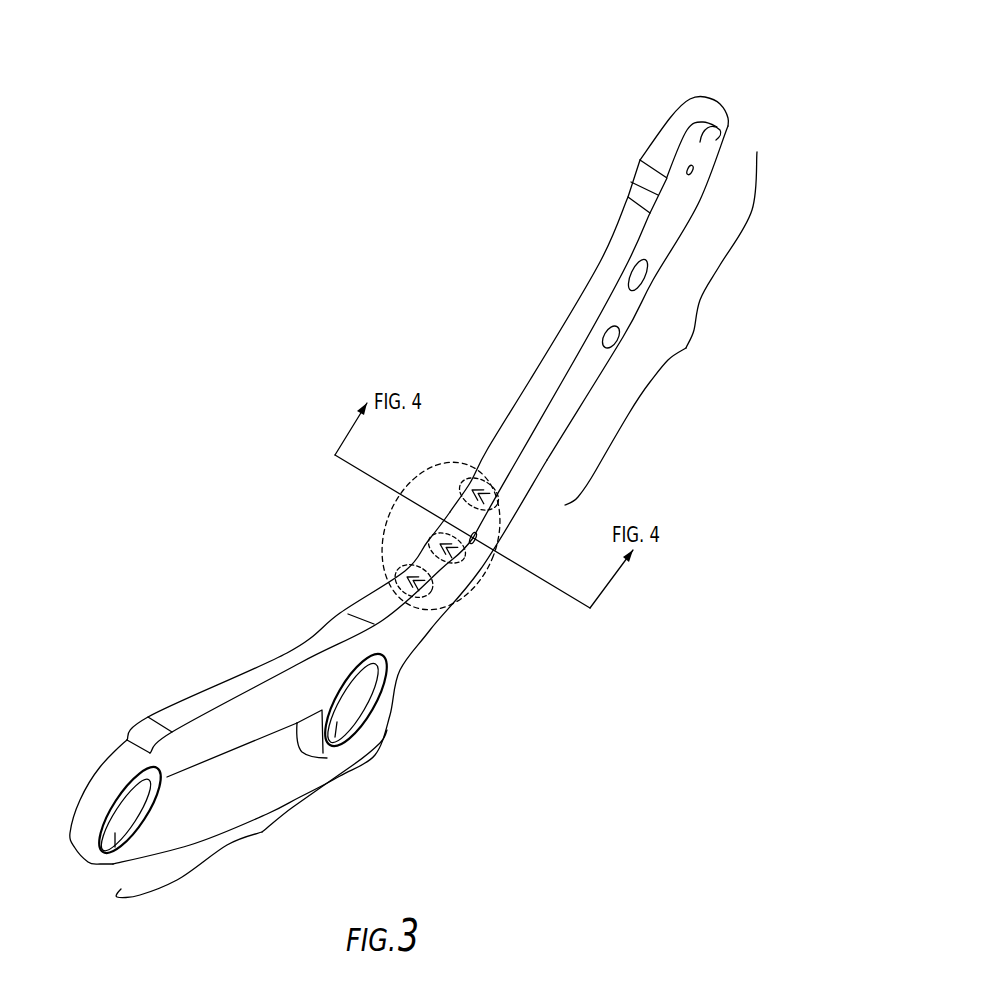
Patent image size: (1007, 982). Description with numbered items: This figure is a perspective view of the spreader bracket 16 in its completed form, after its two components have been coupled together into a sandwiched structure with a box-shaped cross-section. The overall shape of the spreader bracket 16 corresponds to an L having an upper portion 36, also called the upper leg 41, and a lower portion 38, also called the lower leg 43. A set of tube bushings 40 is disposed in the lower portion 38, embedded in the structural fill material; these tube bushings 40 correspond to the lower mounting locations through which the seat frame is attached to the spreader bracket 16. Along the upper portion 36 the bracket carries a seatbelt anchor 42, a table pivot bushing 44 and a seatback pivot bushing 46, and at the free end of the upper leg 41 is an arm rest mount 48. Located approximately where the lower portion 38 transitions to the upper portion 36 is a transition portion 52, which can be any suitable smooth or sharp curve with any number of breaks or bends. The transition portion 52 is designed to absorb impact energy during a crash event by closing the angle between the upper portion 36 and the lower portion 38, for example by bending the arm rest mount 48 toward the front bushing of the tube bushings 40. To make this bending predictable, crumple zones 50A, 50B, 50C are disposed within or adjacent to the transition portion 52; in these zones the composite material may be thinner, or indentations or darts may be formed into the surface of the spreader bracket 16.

The spreader bracket 16 is at (633, 48).
The upper portion 36 is at (661, 328).
The lower portion 38 is at (257, 771).
The tube bushings 40 is at (113, 864).
The upper leg 41 is at (575, 340).
The seatbelt anchor 42 is at (480, 537).
The lower leg 43 is at (288, 655).
The table pivot bushing 44 is at (614, 334).
The seatback pivot bushing 46 is at (640, 274).
The arm rest mount 48 is at (648, 182).
The crumple zone 50A is at (486, 488).
The crumple zone 50B is at (442, 542).
The crumple zone 50C is at (404, 573).
The transition portion 52 is at (462, 465).